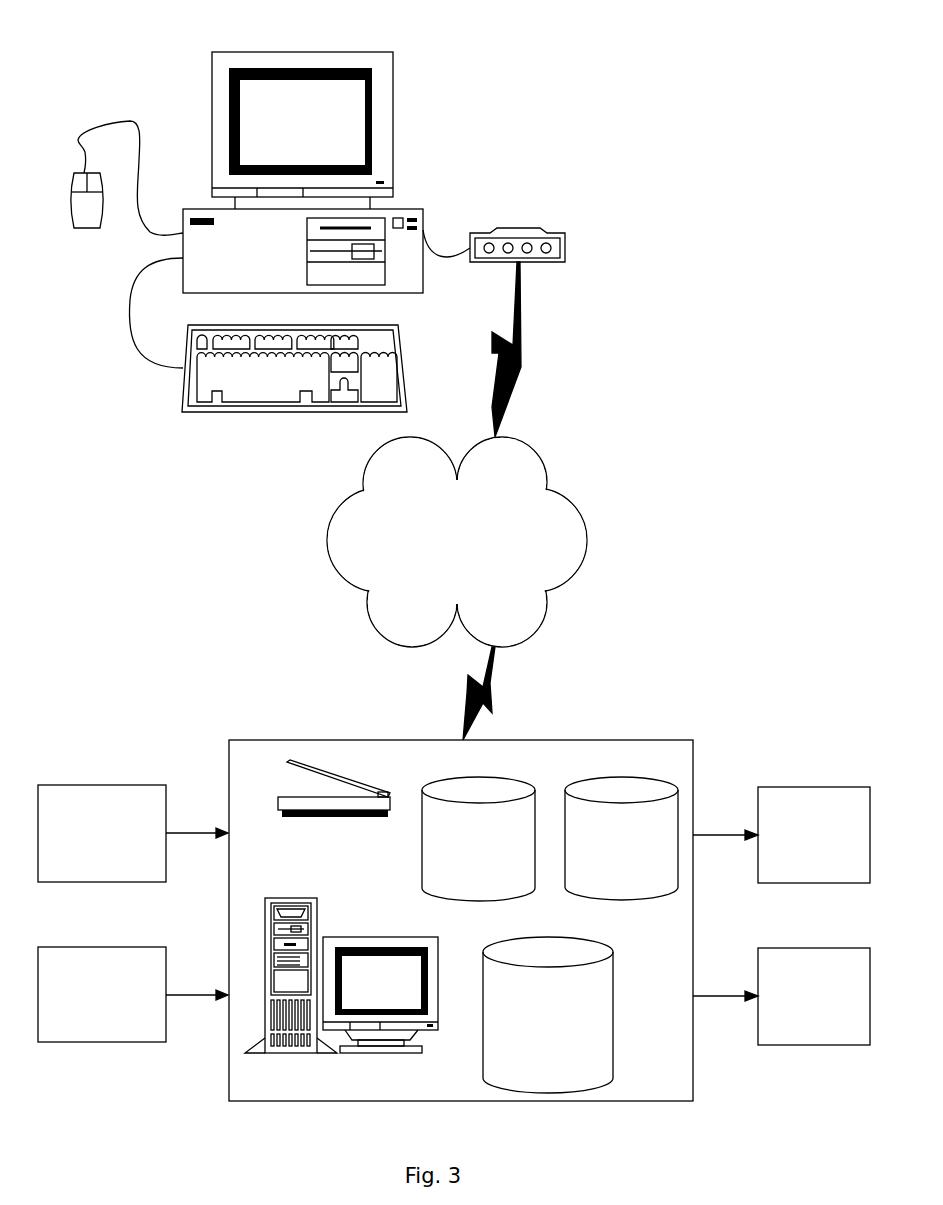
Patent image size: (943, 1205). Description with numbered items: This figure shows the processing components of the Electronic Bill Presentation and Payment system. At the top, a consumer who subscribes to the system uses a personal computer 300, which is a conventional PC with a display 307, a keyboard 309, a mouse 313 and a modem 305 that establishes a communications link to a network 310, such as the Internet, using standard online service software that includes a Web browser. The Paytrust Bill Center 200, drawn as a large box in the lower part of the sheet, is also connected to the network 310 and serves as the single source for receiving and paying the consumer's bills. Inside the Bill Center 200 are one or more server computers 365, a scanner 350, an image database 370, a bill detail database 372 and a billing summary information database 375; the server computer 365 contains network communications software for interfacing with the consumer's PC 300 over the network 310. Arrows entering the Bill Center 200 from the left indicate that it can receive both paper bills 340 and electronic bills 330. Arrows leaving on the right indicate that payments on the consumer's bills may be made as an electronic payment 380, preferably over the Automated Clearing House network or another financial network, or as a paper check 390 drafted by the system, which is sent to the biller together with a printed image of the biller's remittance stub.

The personal computer 300 is at (280, 46).
The display 307 is at (324, 130).
The keyboard 309 is at (268, 353).
The mouse 313 is at (110, 178).
The modem 305 is at (494, 231).
The communications network 310 is at (457, 542).
The Paytrust Bill Center 200 is at (582, 735).
The paper bills 340 is at (102, 821).
The electronic bills 330 is at (102, 981).
The paper check 390 is at (814, 823).
The electronic payment 380 is at (814, 985).
The scanner 350 is at (334, 804).
The bill detail database 372 is at (478, 828).
The image database 370 is at (621, 828).
The billing summary information database 375 is at (555, 1006).
The server computer 365 is at (341, 991).